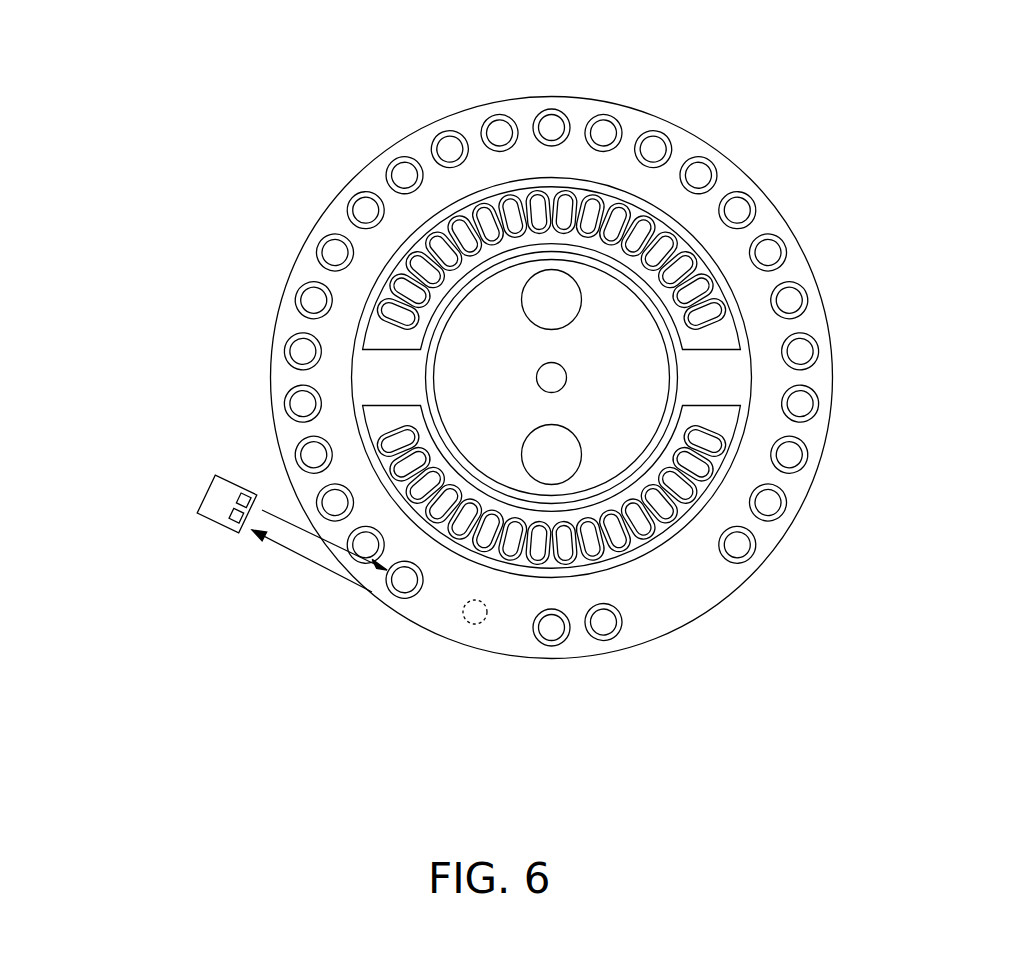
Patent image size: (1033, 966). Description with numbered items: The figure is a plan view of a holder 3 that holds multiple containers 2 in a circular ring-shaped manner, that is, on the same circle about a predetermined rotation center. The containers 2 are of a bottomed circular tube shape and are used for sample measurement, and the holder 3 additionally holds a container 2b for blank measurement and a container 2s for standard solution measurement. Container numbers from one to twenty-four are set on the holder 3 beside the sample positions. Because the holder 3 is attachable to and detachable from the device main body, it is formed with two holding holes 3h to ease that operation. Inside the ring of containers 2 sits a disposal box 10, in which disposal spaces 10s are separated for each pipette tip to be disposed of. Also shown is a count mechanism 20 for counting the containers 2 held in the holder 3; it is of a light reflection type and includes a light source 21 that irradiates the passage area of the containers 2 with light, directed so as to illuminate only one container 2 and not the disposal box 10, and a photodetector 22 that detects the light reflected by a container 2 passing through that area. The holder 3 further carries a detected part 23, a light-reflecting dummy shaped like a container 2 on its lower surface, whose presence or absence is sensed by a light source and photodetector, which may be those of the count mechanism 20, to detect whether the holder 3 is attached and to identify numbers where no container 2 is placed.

The container 2 is at (757, 207).
The container for standard solution measurement 2s is at (552, 647).
The container for blank measurement 2b is at (621, 622).
The holder 3 is at (550, 96).
The holding hole 3h is at (582, 302).
The disposal box 10 is at (750, 323).
The disposal space 10s is at (615, 207).
The count mechanism 20 is at (197, 499).
The light source 21 is at (252, 478).
The photodetector 22 is at (228, 532).
The detected part 23 is at (475, 624).